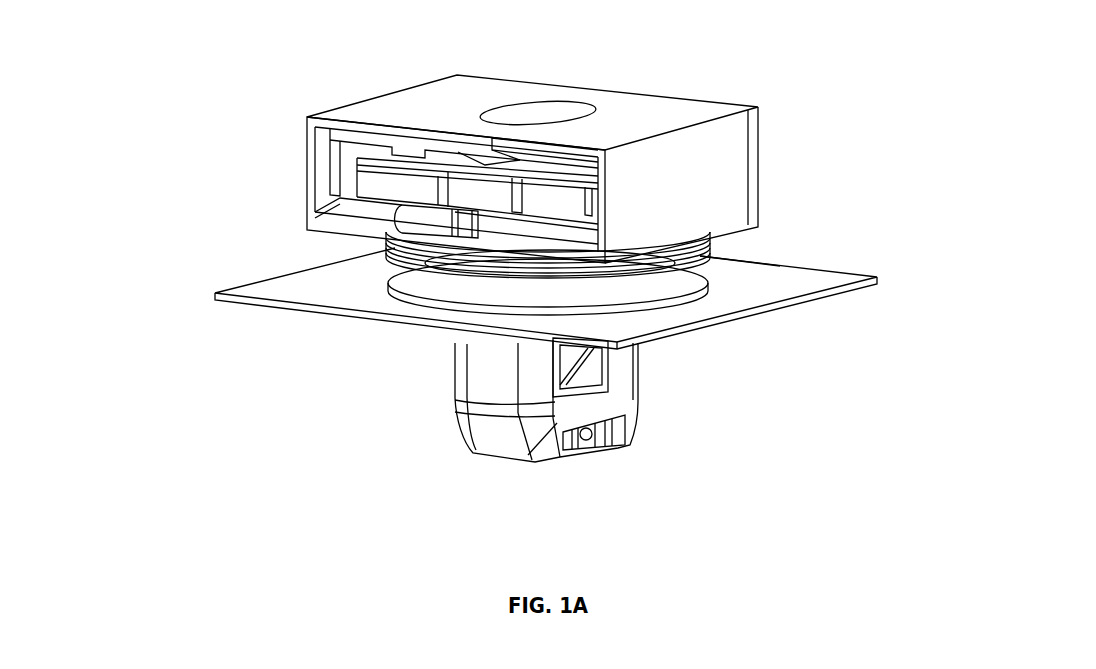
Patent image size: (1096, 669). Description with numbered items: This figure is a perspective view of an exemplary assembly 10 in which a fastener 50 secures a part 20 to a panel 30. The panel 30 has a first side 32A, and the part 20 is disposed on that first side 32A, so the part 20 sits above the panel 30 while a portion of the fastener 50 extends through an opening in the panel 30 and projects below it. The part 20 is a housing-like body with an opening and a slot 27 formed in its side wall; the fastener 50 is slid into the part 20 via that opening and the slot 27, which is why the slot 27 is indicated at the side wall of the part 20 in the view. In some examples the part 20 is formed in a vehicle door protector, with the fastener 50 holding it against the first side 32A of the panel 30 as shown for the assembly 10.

The assembly 10 is at (192, 114).
The part 20 is at (673, 91).
The slot 27 is at (415, 229).
The panel 30 is at (833, 293).
The first side 32A is at (787, 264).
The fastener 50 is at (465, 437).